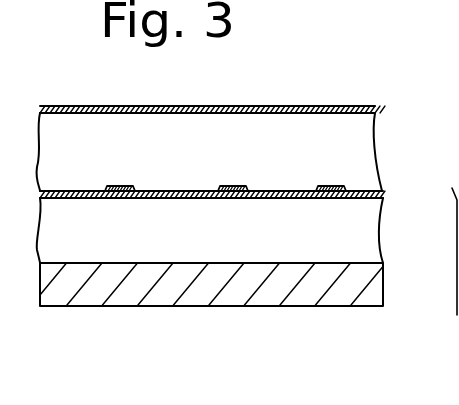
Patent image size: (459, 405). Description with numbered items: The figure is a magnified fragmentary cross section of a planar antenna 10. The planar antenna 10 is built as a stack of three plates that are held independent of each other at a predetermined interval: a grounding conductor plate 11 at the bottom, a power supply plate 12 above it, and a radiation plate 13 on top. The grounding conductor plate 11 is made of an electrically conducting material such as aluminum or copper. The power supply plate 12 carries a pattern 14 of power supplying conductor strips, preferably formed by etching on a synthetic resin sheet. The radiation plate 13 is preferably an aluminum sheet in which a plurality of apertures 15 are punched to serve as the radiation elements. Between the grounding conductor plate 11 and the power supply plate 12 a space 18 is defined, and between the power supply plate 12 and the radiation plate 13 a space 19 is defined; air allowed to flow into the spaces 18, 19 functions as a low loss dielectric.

The planar antenna 10 is at (392, 139).
The grounding conductor plate 11 is at (373, 288).
The power supply plate 12 is at (385, 197).
The radiation plate 13 is at (375, 108).
The pattern of power supplying conductor strips 14 is at (234, 188).
The apertures 15 is at (130, 107).
The space 18 is at (358, 252).
The space 19 is at (358, 174).